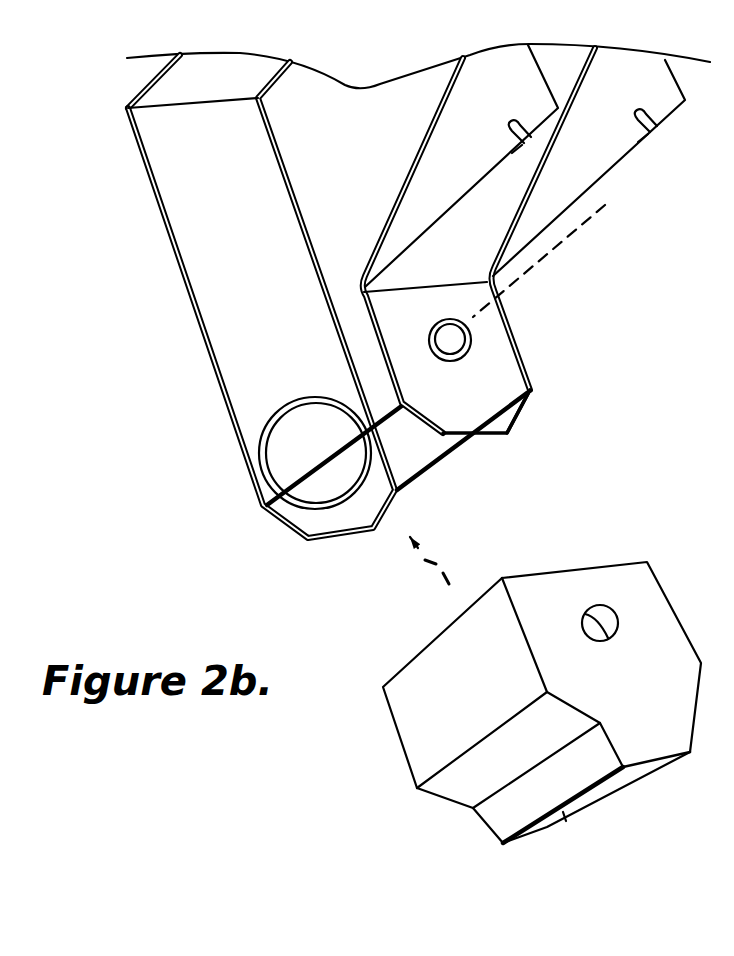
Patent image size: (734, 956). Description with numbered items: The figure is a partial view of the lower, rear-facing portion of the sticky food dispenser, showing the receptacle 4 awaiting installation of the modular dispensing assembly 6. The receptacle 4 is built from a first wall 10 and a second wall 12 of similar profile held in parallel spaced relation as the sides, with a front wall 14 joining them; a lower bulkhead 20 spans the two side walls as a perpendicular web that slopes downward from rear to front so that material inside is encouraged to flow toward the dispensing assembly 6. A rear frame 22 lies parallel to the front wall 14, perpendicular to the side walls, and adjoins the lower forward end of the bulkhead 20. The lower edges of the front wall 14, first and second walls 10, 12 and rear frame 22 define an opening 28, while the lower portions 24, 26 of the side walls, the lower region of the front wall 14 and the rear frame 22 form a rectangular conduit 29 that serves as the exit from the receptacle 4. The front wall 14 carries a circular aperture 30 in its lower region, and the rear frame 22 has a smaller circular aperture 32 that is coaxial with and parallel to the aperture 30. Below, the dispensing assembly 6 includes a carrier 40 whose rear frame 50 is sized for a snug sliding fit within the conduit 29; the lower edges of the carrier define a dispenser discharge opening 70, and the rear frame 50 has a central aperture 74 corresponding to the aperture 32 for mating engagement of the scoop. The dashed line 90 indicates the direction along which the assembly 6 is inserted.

The receptacle 4 is at (358, 314).
The modular dispensing assembly 6 is at (510, 684).
The first wall 10 is at (303, 305).
The second wall 12 is at (578, 185).
The front wall 14 is at (187, 187).
The lower bulkhead 20 is at (532, 282).
The rear frame 22 is at (481, 357).
The lower portion of first wall 24 is at (245, 357).
The lower portion of second wall 26 is at (502, 388).
The opening 28 is at (423, 497).
The rectangular conduit 29 is at (462, 480).
The circular aperture 30 is at (260, 425).
The circular aperture 32 is at (463, 322).
The carrier 40 is at (475, 773).
The rear frame 50 is at (615, 632).
The dispenser discharge opening 70 is at (600, 818).
The aperture 74 is at (598, 603).
The insertion axis 90 is at (568, 237).